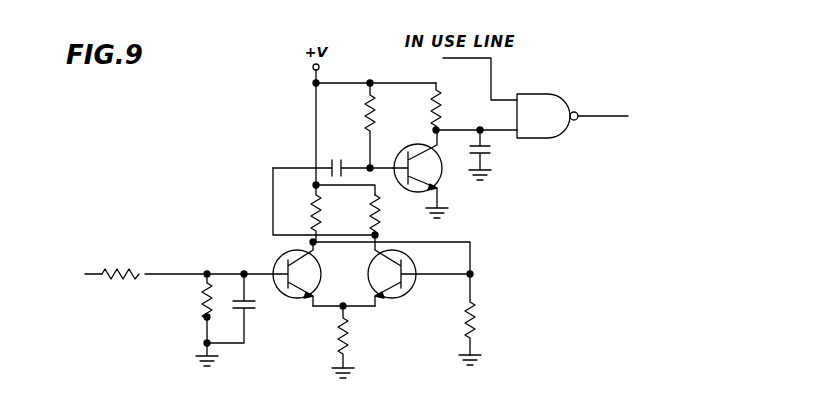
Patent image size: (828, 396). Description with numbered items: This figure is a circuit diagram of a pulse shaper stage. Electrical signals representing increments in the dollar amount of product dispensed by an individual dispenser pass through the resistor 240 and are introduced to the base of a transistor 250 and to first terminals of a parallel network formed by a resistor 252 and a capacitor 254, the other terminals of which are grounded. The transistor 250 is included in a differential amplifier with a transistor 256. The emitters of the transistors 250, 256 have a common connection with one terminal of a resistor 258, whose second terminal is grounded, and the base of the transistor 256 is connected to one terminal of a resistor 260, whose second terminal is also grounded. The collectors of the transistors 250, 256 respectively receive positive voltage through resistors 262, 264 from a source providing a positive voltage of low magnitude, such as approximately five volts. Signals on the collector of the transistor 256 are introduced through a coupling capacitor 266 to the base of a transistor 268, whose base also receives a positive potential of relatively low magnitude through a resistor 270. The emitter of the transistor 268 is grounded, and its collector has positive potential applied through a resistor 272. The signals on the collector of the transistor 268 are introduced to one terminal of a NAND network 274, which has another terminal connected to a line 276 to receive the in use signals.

The resistor 240 is at (134, 269).
The transistor 250 is at (311, 270).
The resistor 252 is at (201, 306).
The capacitor 254 is at (262, 310).
The transistor 256 is at (396, 300).
The resistor 258 is at (350, 352).
The resistor 260 is at (478, 320).
The resistor 262 is at (305, 200).
The resistor 264 is at (378, 218).
The coupling capacitor 266 is at (353, 152).
The transistor 268 is at (452, 190).
The resistor 270 is at (366, 112).
The resistor 272 is at (428, 108).
The NAND network 274 is at (563, 98).
The line 276 is at (496, 78).